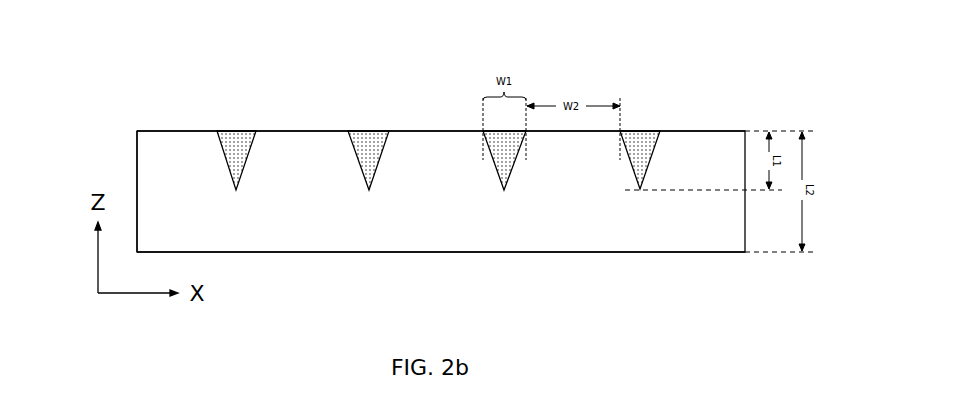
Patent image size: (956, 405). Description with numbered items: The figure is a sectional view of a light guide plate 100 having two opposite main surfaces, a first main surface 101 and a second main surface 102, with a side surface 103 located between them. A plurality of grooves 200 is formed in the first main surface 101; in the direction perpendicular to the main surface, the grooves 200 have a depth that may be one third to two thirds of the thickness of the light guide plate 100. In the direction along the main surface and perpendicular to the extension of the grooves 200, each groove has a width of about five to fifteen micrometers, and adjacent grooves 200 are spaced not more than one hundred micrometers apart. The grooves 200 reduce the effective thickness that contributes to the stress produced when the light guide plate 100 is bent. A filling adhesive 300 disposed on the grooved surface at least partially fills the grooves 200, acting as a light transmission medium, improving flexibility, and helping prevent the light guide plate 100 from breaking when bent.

The light guide plate 100 is at (567, 233).
The first main surface 101 is at (172, 130).
The second main surface 102 is at (257, 252).
The side surface 103 is at (137, 170).
The grooves 200 is at (363, 132).
The filling adhesive 300 is at (638, 140).